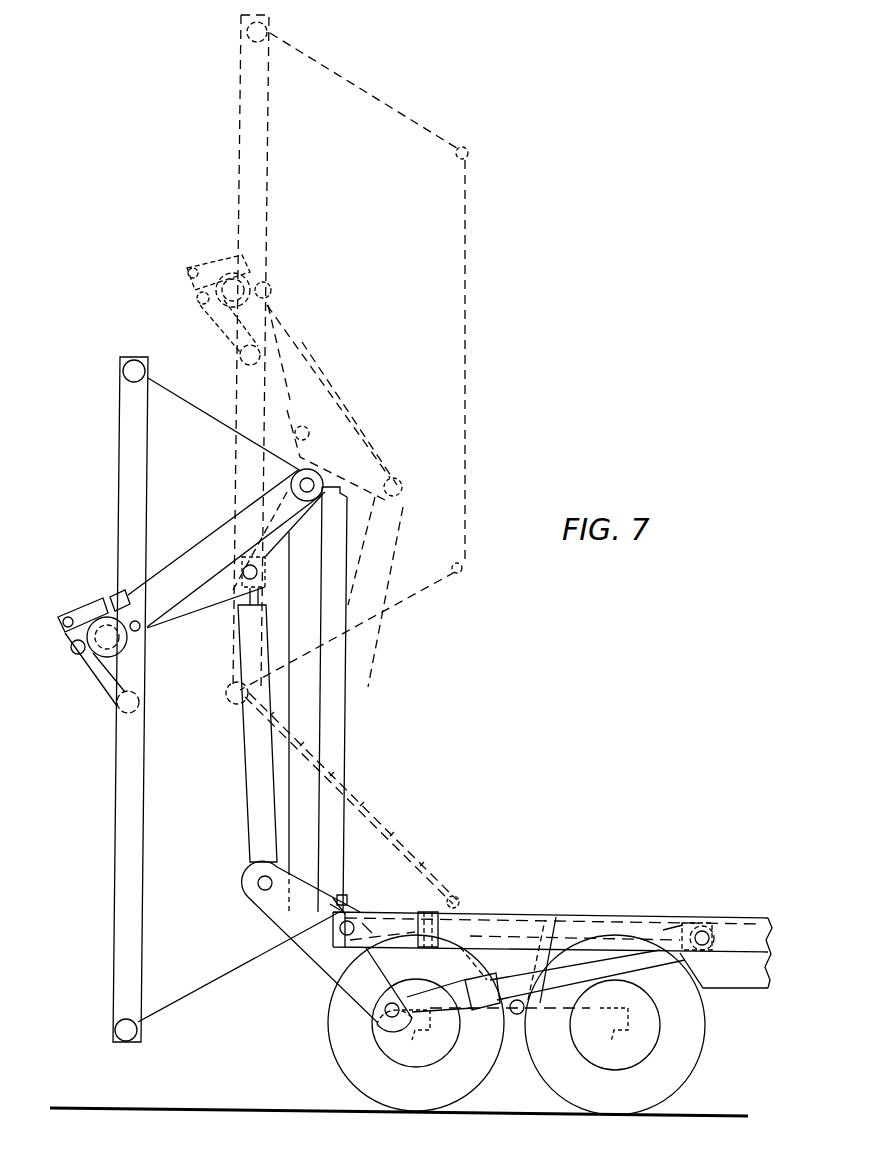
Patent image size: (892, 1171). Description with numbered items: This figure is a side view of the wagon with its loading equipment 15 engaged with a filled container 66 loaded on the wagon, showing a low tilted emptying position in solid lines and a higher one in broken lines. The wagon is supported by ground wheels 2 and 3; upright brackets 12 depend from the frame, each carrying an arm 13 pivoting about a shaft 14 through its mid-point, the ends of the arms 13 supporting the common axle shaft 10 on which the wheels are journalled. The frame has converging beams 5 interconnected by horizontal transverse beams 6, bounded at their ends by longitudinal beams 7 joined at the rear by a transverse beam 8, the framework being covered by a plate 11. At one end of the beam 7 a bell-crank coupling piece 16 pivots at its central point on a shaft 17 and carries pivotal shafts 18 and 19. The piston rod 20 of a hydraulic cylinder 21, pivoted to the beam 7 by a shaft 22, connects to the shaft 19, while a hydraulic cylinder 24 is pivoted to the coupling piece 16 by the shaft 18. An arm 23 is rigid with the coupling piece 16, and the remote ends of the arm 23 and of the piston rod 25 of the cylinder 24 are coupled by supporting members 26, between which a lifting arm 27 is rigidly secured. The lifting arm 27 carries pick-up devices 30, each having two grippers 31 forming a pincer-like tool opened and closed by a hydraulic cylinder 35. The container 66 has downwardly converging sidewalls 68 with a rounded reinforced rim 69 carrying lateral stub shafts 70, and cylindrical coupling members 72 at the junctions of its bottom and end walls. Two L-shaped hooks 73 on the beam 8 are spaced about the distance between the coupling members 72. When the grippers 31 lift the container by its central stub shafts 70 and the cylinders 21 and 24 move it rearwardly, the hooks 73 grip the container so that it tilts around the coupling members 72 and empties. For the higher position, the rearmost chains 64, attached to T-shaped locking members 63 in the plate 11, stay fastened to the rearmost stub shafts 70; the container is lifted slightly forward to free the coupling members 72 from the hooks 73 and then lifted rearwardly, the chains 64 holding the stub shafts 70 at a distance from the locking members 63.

The ground wheel 2 is at (668, 1090).
The ground wheel 3 is at (352, 1086).
The beam 5 is at (746, 988).
The transverse beam 6 is at (663, 930).
The longitudinal beam 7 is at (578, 914).
The transverse beam 8 is at (310, 940).
The axle shaft 10 is at (519, 1034).
The plate 11 is at (750, 914).
The upright bracket 12 is at (514, 1018).
The arm 13 is at (545, 1012).
The shaft 14 is at (490, 1010).
The loading equipment 15 is at (240, 512).
The bell-crank coupling piece 16 is at (332, 985).
The shaft 17 is at (326, 964).
The pivotal shaft 18 is at (257, 884).
The pivotal shaft 19 is at (378, 1022).
The piston rod 20 is at (455, 982).
The hydraulic cylinder 21 is at (640, 960).
The shaft 22 is at (702, 920).
The arm 23 is at (380, 706).
The hydraulic cylinder 24 is at (248, 792).
The piston rod 25 is at (240, 592).
The supporting member 26 is at (333, 386).
The lifting arm 27 is at (294, 339).
The pick-up device 30 is at (219, 344).
The gripper 31 is at (104, 712).
The hydraulic cylinder 35 is at (222, 266).
The T-shaped locking member 63 is at (460, 896).
The chain 64 is at (398, 836).
The container 66 is at (106, 822).
The sidewall 68 is at (466, 314).
The rim 69 is at (240, 146).
The stub shaft 70 is at (136, 360).
The cylindrical coupling member 72 is at (352, 902).
The L-shaped hook 73 is at (346, 898).